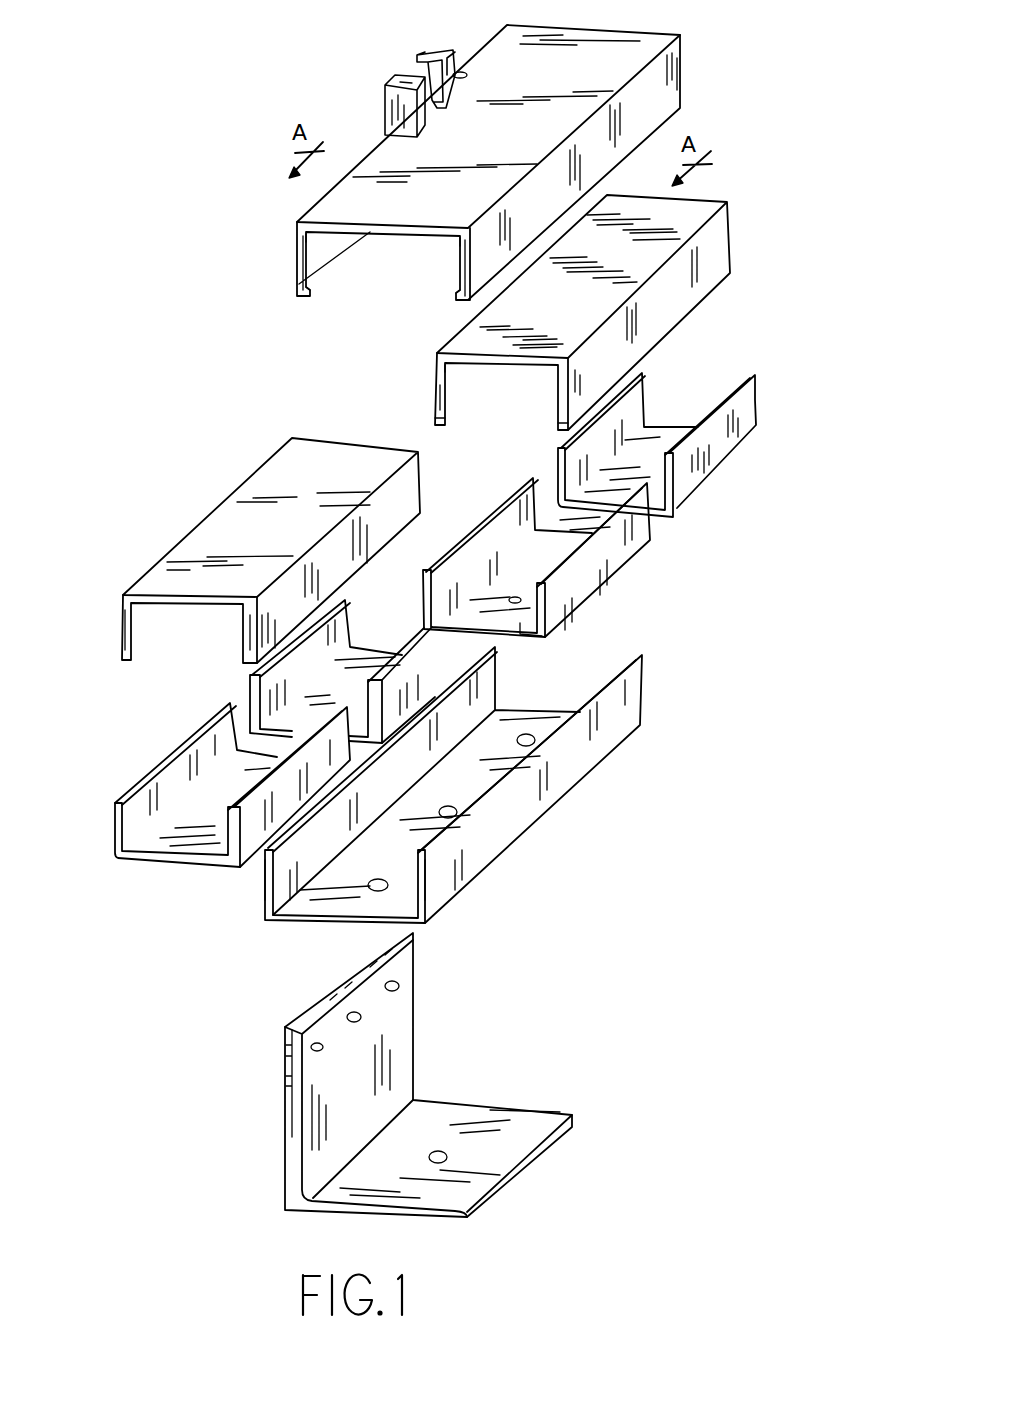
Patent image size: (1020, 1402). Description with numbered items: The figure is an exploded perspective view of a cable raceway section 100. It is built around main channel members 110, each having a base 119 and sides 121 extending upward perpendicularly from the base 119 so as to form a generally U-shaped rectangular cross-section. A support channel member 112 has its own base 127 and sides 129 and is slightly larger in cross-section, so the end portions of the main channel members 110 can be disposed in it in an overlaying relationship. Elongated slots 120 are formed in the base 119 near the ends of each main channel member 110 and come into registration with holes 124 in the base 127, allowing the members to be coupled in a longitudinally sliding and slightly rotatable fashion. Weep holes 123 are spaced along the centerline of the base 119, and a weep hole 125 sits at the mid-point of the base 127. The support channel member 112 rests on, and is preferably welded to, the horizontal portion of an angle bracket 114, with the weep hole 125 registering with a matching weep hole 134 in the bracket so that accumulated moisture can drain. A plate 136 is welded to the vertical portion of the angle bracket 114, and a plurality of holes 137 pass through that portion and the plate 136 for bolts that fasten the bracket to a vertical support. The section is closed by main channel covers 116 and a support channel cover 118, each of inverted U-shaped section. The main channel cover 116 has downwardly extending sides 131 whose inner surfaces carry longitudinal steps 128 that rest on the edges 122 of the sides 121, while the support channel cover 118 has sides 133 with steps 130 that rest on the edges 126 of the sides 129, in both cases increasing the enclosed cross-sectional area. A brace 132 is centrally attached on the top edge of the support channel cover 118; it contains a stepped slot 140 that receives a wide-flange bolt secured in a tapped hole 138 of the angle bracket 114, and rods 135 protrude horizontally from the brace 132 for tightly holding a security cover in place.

The cable raceway section 100 is at (158, 139).
The main channel member 110 is at (179, 716).
The support channel member 112 is at (545, 838).
The angle bracket 114 is at (414, 1060).
The main channel cover 116 is at (727, 285).
The support channel cover 118 is at (690, 77).
The base 119 is at (533, 626).
The elongated slot 120 is at (518, 596).
The side 121 is at (425, 613).
The edge 122 is at (756, 373).
The weep hole 123 is at (668, 432).
The hole 124 is at (528, 735).
The weep hole 125 is at (444, 815).
The edge 126 is at (496, 650).
The base 127 is at (362, 940).
The step 128 is at (450, 375).
The side 129 is at (262, 884).
The step 130 is at (457, 243).
The side 131 is at (434, 389).
The brace 132 is at (386, 96).
The side 133 is at (305, 249).
The weep hole 134 is at (445, 1152).
The rod 135 is at (468, 74).
The plate 136 is at (283, 1034).
The hole 137 is at (402, 987).
The tapped hole 138 is at (365, 1017).
The stepped slot 140 is at (426, 50).